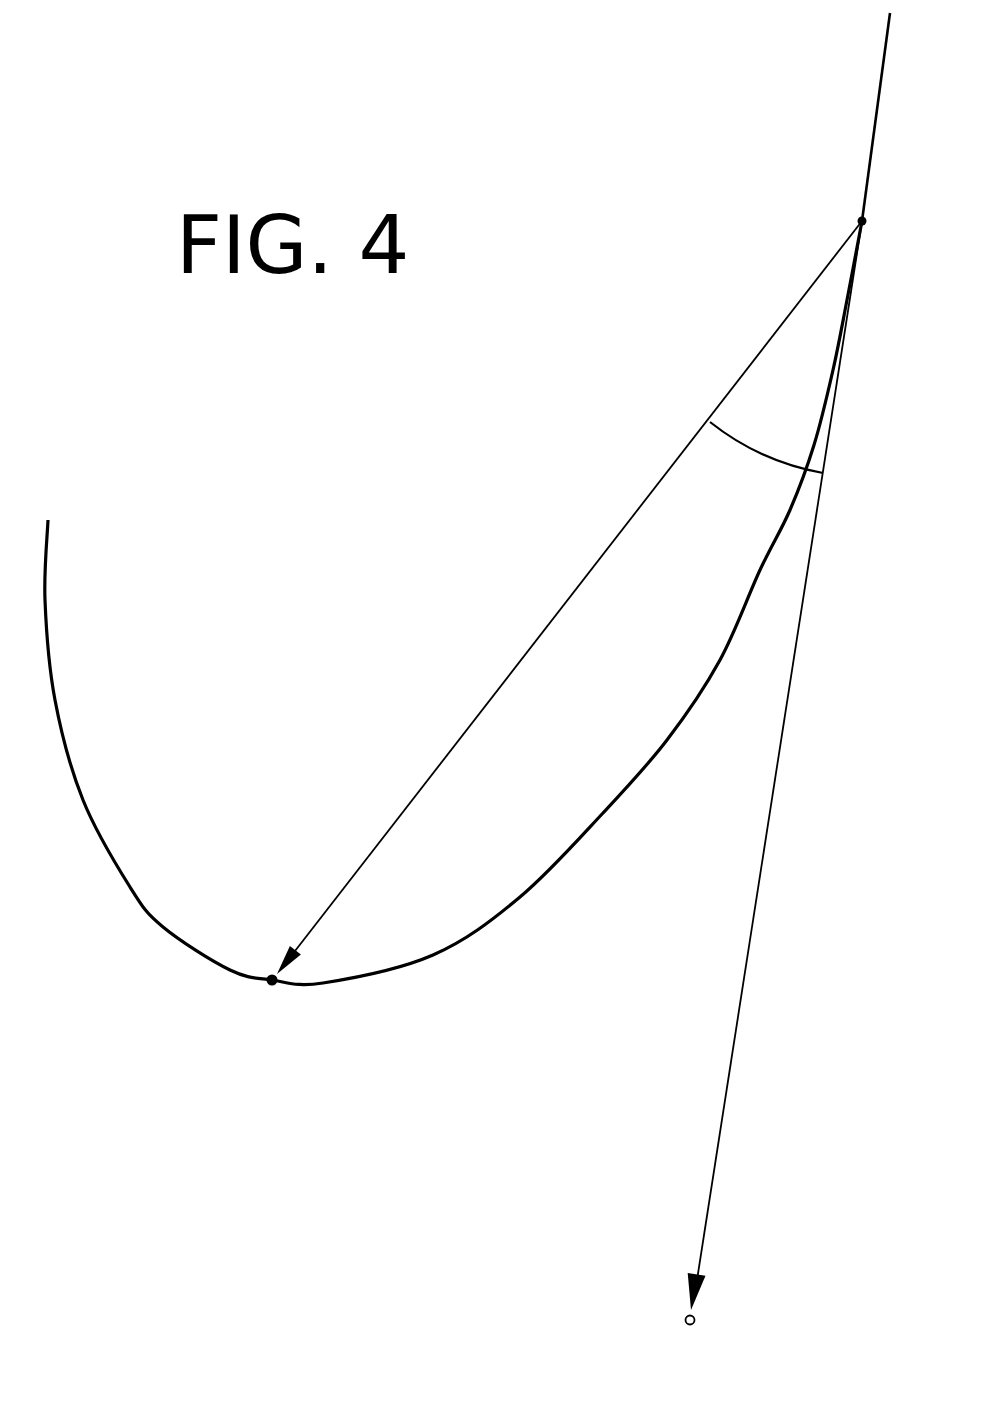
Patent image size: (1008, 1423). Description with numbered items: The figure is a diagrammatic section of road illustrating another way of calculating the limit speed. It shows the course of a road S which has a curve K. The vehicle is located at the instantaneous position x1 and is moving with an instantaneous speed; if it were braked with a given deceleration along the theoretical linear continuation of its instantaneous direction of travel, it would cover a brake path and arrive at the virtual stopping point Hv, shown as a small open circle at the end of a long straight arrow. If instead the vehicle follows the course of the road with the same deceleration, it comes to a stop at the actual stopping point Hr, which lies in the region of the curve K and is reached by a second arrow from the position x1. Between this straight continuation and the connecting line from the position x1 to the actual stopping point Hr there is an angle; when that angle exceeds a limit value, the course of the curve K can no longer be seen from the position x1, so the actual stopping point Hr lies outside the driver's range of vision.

The road S is at (881, 103).
The instantaneous position x1 is at (837, 213).
The actual stopping point Hr is at (263, 975).
The curve K is at (433, 955).
The virtual stopping point Hv is at (685, 1321).